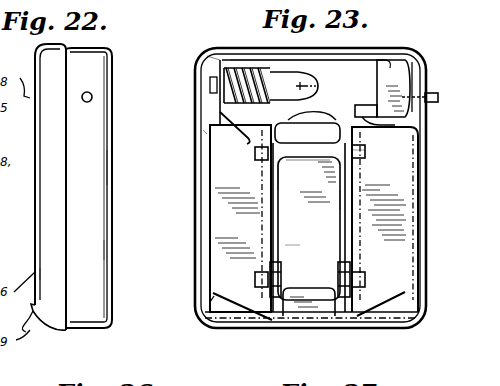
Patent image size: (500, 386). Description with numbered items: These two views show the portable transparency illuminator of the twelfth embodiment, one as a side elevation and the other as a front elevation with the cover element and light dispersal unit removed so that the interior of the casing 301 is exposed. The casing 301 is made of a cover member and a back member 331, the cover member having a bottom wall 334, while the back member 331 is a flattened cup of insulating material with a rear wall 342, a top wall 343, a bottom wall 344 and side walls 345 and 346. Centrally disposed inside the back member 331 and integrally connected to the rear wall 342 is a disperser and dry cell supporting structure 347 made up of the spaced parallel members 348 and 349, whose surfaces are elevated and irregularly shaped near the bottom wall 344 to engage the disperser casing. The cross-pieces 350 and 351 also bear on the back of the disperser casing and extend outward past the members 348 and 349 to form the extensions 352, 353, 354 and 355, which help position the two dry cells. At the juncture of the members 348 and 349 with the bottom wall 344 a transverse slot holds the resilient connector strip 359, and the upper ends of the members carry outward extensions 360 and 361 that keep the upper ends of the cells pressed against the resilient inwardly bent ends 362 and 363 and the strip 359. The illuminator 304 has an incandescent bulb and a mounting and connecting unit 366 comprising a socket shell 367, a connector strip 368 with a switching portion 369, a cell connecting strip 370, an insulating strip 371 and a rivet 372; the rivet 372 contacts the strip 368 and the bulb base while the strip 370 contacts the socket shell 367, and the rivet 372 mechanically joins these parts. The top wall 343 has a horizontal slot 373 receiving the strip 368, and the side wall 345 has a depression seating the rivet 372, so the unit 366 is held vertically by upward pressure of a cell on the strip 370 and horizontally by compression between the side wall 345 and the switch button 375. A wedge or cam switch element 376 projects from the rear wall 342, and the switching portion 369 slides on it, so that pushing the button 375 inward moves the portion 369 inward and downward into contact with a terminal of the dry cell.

In FIG. 22, the casing 301 is at (88, 193).
In FIG. 23, the illuminator 304 is at (318, 86).
In FIG. 22, the back member 331 is at (94, 253).
In FIG. 23, the back member 331 is at (302, 239).
In FIG. 22, the bottom wall 334 is at (62, 333).
In FIG. 22, the rear wall 342 is at (112, 277).
In FIG. 23, the rear wall 342 is at (309, 227).
In FIG. 23, the top wall 343 is at (243, 48).
In FIG. 23, the bottom wall 344 is at (318, 296).
In FIG. 22, the side wall 345 is at (22, 290).
In FIG. 23, the side wall 345 is at (213, 297).
In FIG. 22, the side wall 346 is at (88, 170).
In FIG. 23, the side wall 346 is at (427, 192).
In FIG. 23, the disperser and dry cell supporting structure 347 is at (356, 330).
In FIG. 23, the longitudinally directed member 348 is at (278, 180).
In FIG. 23, the longitudinally directed member 349 is at (345, 199).
In FIG. 23, the cross-piece 350 is at (326, 148).
In FIG. 23, the cross-piece 351 is at (300, 280).
In FIG. 23, the extension 352 is at (255, 155).
In FIG. 23, the extension 353 is at (374, 157).
In FIG. 23, the extension 354 is at (255, 280).
In FIG. 23, the extension 355 is at (365, 280).
In FIG. 23, the resilient connector strip 359 is at (292, 310).
In FIG. 23, the extension 360 is at (203, 138).
In FIG. 23, the extension 361 is at (404, 128).
In FIG. 23, the resilient inwardly bent end 362 is at (212, 300).
In FIG. 23, the resilient inwardly bent end 363 is at (398, 300).
In FIG. 23, the mounting and connecting unit 366 is at (214, 66).
In FIG. 23, the socket shell 367 is at (260, 104).
In FIG. 23, the connector strip 368 is at (380, 88).
In FIG. 23, the switching portion 369 is at (426, 113).
In FIG. 23, the cell connecting strip 370 is at (277, 133).
In FIG. 23, the insulating strip 371 is at (220, 116).
In FIG. 23, the rivet 372 is at (210, 88).
In FIG. 23, the slot 373 is at (355, 55).
In FIG. 22, the switch button 375 is at (91, 94).
In FIG. 23, the switch button 375 is at (432, 93).
In FIG. 23, the cam switch element 376 is at (368, 110).